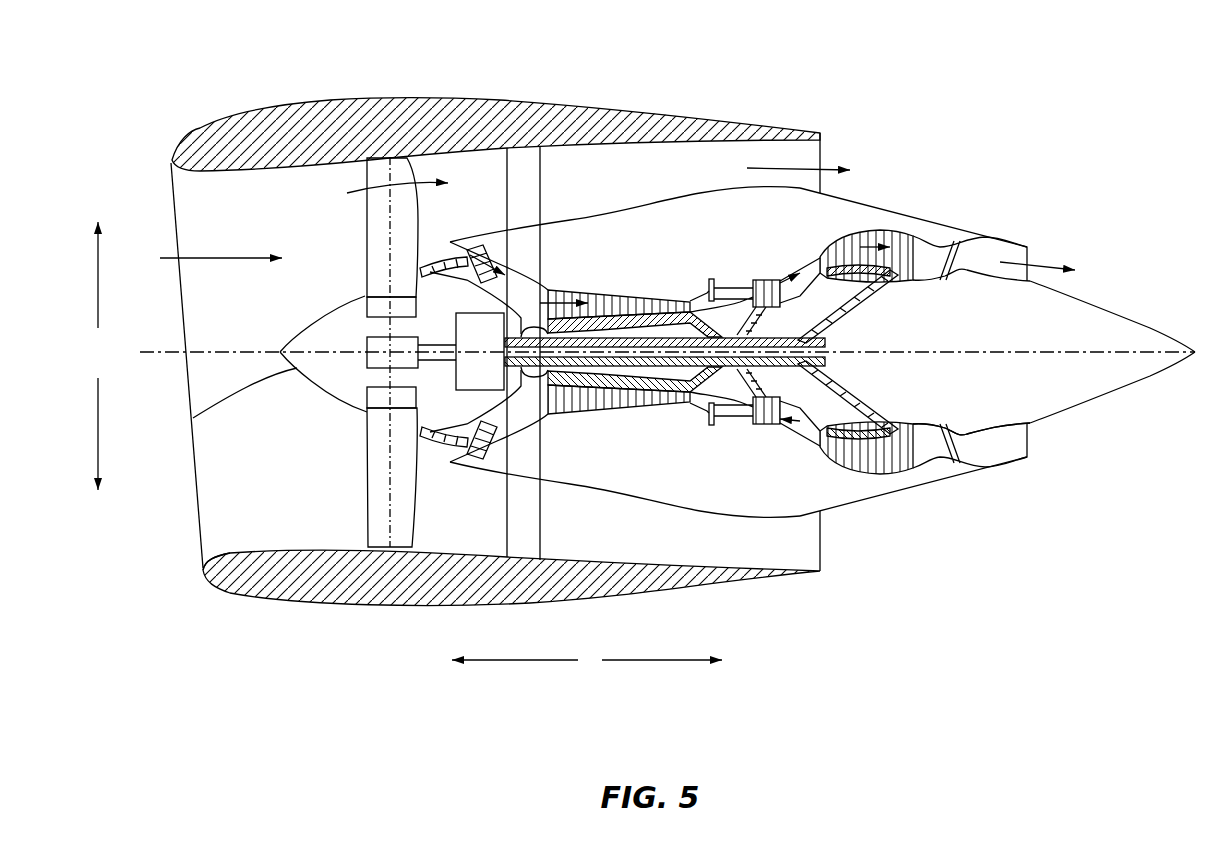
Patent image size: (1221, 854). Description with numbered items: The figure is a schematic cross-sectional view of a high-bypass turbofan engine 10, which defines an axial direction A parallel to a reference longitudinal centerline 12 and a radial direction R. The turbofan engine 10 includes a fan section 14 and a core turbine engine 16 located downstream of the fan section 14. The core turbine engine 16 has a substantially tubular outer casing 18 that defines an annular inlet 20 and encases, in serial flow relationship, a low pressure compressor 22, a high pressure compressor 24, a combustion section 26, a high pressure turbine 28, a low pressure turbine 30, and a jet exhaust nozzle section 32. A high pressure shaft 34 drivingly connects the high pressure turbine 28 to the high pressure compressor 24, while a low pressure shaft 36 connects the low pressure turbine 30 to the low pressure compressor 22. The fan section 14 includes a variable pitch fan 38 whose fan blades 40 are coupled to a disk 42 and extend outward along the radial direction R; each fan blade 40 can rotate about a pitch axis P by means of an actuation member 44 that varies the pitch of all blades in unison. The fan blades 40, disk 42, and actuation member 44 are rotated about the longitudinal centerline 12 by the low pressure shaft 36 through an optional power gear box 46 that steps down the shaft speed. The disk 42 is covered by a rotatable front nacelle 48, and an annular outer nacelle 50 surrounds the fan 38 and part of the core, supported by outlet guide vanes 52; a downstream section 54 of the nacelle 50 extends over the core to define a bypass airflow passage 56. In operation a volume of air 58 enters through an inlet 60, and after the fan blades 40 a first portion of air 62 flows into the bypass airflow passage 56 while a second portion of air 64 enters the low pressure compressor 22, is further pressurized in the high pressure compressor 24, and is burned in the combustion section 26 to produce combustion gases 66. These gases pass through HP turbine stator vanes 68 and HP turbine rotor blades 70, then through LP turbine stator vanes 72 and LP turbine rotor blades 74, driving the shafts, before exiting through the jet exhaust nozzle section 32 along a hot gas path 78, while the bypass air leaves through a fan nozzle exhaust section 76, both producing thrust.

The turbofan engine 10 is at (953, 118).
The longitudinal centerline 12 is at (977, 352).
The fan section 14 is at (327, 182).
The core turbine engine 16 is at (653, 243).
The outer casing 18 is at (690, 503).
The annular inlet 20 is at (452, 450).
The low pressure compressor 22 is at (508, 420).
The high pressure compressor 24 is at (570, 405).
The combustion section 26 is at (730, 414).
The high pressure turbine 28 is at (847, 412).
The low pressure turbine 30 is at (898, 472).
The jet exhaust nozzle section 32 is at (955, 455).
The high pressure shaft 34 is at (737, 330).
The low pressure shaft 36 is at (845, 320).
The variable pitch fan 38 is at (334, 400).
The fan blades 40 is at (365, 493).
The disk 42 is at (363, 307).
The actuation member 44 is at (365, 343).
The power gear box 46 is at (514, 310).
The front nacelle 48 is at (193, 418).
The outer nacelle 50 is at (420, 604).
The outlet guide vanes 52 is at (540, 175).
The downstream section of the nacelle 54 is at (770, 125).
The bypass airflow passage 56 is at (703, 182).
The volume of air 58 is at (217, 255).
The inlet 60 is at (203, 569).
The first portion of air 62 is at (787, 160).
The second portion of air 64 is at (440, 253).
The combustion gases 66 is at (862, 245).
The HP turbine stator vanes 68 is at (746, 420).
The HP turbine rotor blades 70 is at (805, 390).
The LP turbine stator vanes 72 is at (830, 453).
The LP turbine rotor blades 74 is at (838, 463).
The fan nozzle exhaust section 76 is at (810, 157).
The hot gas path 78 is at (808, 265).
The pitch axis P is at (392, 172).
The radial direction R is at (98, 356).
The axial direction A is at (587, 661).